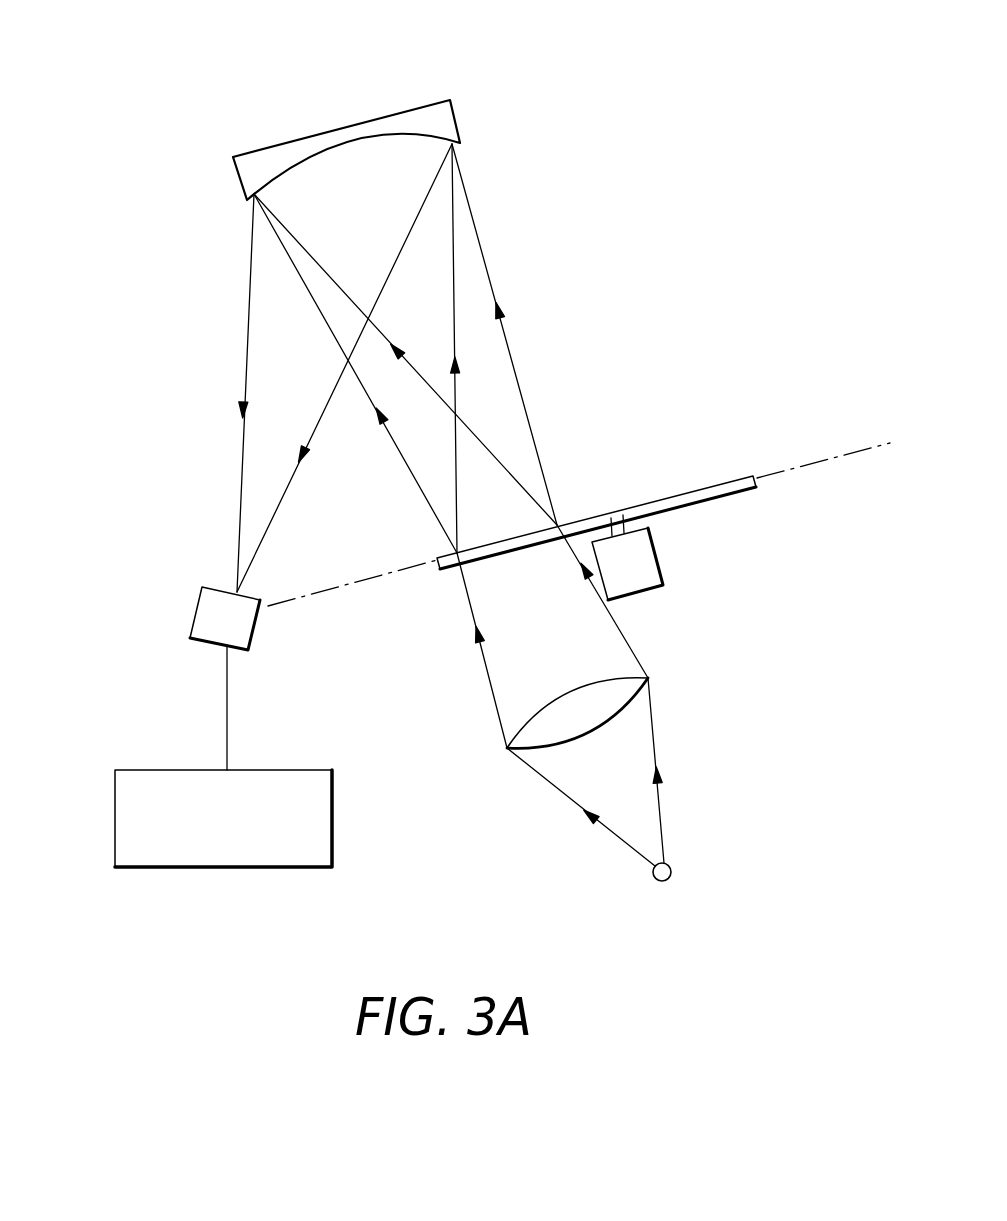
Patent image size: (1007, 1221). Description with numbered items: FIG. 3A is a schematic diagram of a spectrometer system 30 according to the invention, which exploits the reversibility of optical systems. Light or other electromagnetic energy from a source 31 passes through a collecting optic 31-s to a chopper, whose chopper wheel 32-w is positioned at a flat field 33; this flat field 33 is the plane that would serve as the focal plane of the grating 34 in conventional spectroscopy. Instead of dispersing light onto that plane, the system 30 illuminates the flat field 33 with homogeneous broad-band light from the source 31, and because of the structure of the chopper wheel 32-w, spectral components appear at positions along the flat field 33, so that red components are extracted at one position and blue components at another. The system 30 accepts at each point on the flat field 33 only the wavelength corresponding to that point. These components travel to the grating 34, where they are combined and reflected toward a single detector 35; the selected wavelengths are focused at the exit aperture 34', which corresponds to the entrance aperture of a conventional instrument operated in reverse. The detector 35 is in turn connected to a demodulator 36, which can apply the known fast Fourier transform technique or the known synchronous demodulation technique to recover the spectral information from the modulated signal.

The system 30 is at (148, 102).
The grating 34 is at (346, 133).
The exit aperture 34' is at (292, 562).
The detector 35 is at (195, 625).
The demodulator 36 is at (152, 862).
The flat field 33 is at (830, 456).
The chopper wheel 32-w is at (668, 492).
The collecting optic 31-s is at (635, 688).
The source 31 is at (672, 872).